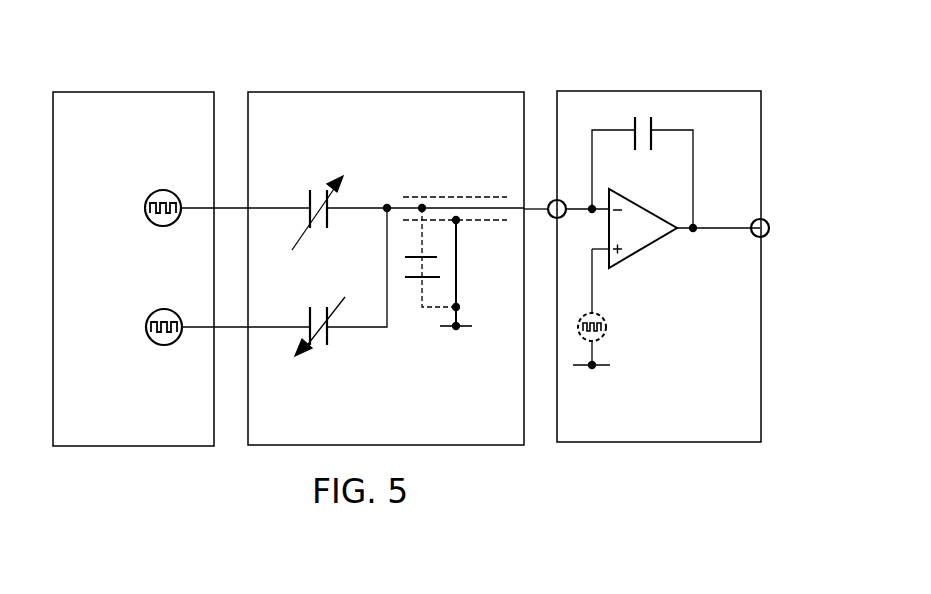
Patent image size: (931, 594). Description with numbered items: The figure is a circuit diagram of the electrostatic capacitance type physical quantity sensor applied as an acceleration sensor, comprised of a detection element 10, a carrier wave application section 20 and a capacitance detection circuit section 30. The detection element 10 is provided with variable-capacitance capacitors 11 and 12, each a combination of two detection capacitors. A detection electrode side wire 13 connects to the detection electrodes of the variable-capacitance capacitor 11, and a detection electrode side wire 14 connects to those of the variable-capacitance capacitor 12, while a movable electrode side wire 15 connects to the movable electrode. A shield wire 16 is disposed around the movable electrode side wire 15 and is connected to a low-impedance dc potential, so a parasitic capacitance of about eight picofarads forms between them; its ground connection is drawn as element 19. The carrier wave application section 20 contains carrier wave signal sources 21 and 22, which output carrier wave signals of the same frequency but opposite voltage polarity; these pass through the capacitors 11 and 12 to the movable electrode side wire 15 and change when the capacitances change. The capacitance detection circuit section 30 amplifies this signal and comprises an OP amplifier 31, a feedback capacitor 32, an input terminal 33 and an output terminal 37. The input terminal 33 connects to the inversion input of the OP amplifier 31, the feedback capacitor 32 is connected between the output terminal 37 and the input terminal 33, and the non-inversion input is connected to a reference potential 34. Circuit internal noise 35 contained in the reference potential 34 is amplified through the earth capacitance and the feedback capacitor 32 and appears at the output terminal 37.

The detection element 10 is at (283, 92).
The variable-capacitance capacitor 11 is at (317, 188).
The variable-capacitance capacitor 12 is at (318, 345).
The detection electrode side wire 13 is at (265, 208).
The detection electrode side wire 14 is at (265, 328).
The movable electrode side wire 15 is at (472, 212).
The shield wire 16 is at (453, 197).
The parasitic capacitance ground (Cp) 19 is at (467, 333).
The carrier wave application section 20 is at (110, 92).
The carrier wave signal source 21 is at (152, 196).
The carrier wave signal source 22 is at (152, 314).
The capacitance detection circuit section 30 is at (590, 91).
The OP amplifier 31 is at (641, 250).
The feedback capacitor 32 is at (645, 136).
The input terminal 33 is at (568, 203).
The reference potential 34 is at (602, 373).
The circuit internal noise 35 is at (603, 337).
The output terminal 37 is at (767, 220).